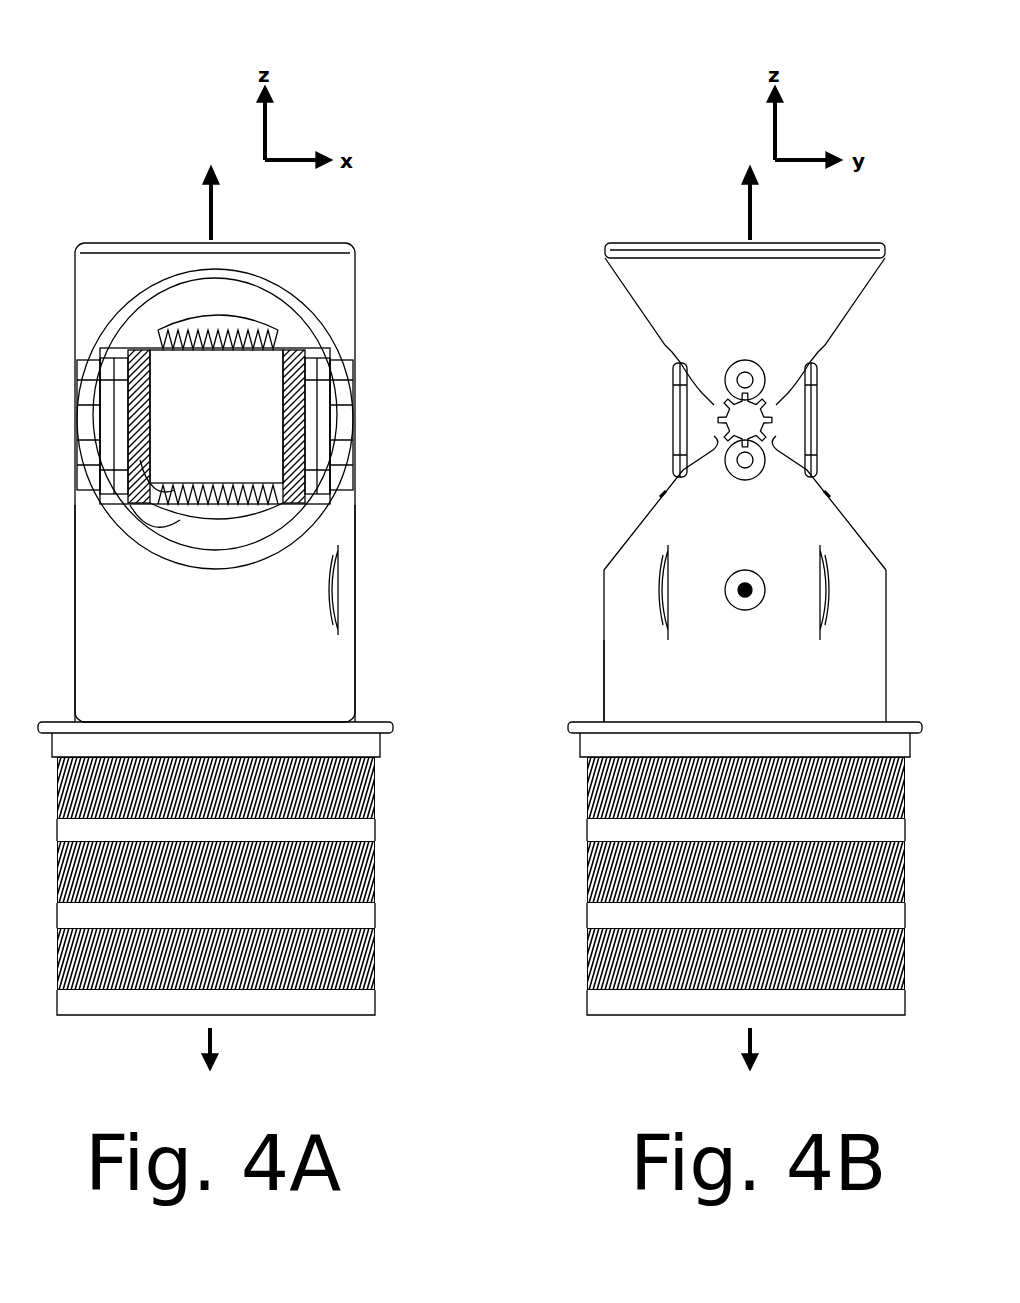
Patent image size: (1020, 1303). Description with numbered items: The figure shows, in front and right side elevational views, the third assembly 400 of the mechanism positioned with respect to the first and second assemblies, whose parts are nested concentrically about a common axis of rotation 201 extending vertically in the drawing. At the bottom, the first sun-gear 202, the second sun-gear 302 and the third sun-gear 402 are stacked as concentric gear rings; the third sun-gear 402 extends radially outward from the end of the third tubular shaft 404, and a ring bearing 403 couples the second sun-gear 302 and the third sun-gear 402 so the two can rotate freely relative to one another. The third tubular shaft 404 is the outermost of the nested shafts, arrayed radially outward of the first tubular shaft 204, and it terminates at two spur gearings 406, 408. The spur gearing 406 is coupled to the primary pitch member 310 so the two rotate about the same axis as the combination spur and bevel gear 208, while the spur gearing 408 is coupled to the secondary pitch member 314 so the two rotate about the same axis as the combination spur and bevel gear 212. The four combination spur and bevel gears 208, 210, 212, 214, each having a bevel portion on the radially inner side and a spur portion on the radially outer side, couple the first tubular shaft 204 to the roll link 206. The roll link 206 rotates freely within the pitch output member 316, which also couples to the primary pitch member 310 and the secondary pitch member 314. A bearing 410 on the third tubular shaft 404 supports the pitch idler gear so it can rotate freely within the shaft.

In FIG. 4A, the third assembly 400 is at (172, 58).
In FIG. 4B, the third assembly 400 is at (686, 80).
In FIG. 4A, the common axis of rotation 201 is at (200, 188).
In FIG. 4B, the common axis of rotation 201 is at (738, 212).
In FIG. 4A, the roll link 206 is at (183, 338).
In FIG. 4A, the pitch output member 316 is at (343, 287).
In FIG. 4B, the pitch output member 316 is at (642, 288).
In FIG. 4A, the secondary pitch member 314 is at (313, 367).
In FIG. 4A, the spur gearing 408 is at (358, 428).
In FIG. 4B, the spur gearing 408 is at (717, 433).
In FIG. 4A, the first tubular shaft 204 is at (223, 530).
In FIG. 4A, the combination spur and bevel gear 210 is at (152, 397).
In FIG. 4A, the combination spur and bevel gear 214 is at (278, 368).
In FIG. 4A, the combination spur and bevel gear 208 is at (152, 462).
In FIG. 4A, the combination spur and bevel gear 212 is at (280, 427).
In FIG. 4A, the primary pitch member 310 is at (118, 373).
In FIG. 4A, the spur gearing 406 is at (88, 432).
In FIG. 4B, the bearing 410 is at (745, 590).
In FIG. 4A, the third tubular shaft 404 is at (343, 648).
In FIG. 4B, the third tubular shaft 404 is at (627, 648).
In FIG. 4A, the ring bearing 403 is at (352, 708).
In FIG. 4B, the ring bearing 403 is at (618, 708).
In FIG. 4A, the third sun-gear 402 is at (375, 790).
In FIG. 4B, the third sun-gear 402 is at (595, 803).
In FIG. 4A, the second sun-gear 302 is at (375, 870).
In FIG. 4B, the second sun-gear 302 is at (595, 875).
In FIG. 4A, the first sun-gear 202 is at (375, 945).
In FIG. 4B, the first sun-gear 202 is at (595, 950).